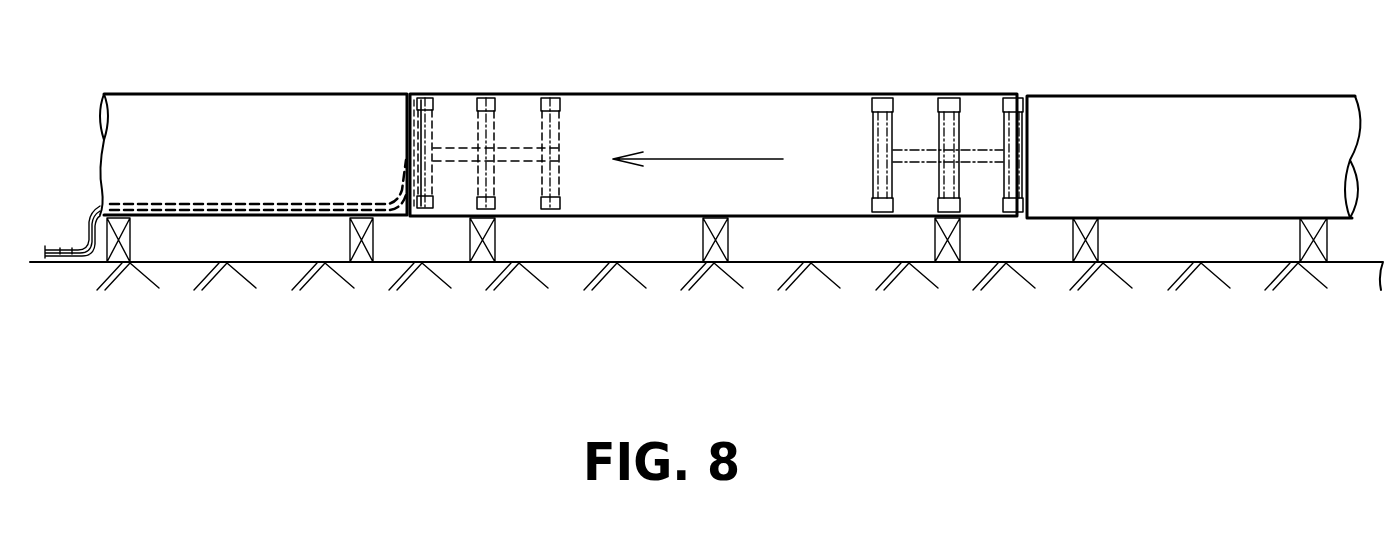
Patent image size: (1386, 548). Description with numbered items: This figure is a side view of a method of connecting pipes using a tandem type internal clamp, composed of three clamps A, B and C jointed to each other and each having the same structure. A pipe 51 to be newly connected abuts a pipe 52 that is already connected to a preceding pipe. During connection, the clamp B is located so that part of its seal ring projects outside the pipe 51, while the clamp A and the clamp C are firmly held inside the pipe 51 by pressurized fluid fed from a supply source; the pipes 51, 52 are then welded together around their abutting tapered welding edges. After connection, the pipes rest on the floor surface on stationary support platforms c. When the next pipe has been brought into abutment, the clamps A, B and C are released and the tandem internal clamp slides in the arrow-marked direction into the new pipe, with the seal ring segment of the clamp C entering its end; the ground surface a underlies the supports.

The pipe 51 is at (258, 115).
The pipe 52 is at (1265, 117).
The clamp A is at (487, 96).
The clamp B is at (552, 96).
The clamp C is at (423, 95).
The stationary support platform c is at (130, 238).
The ground a is at (752, 268).